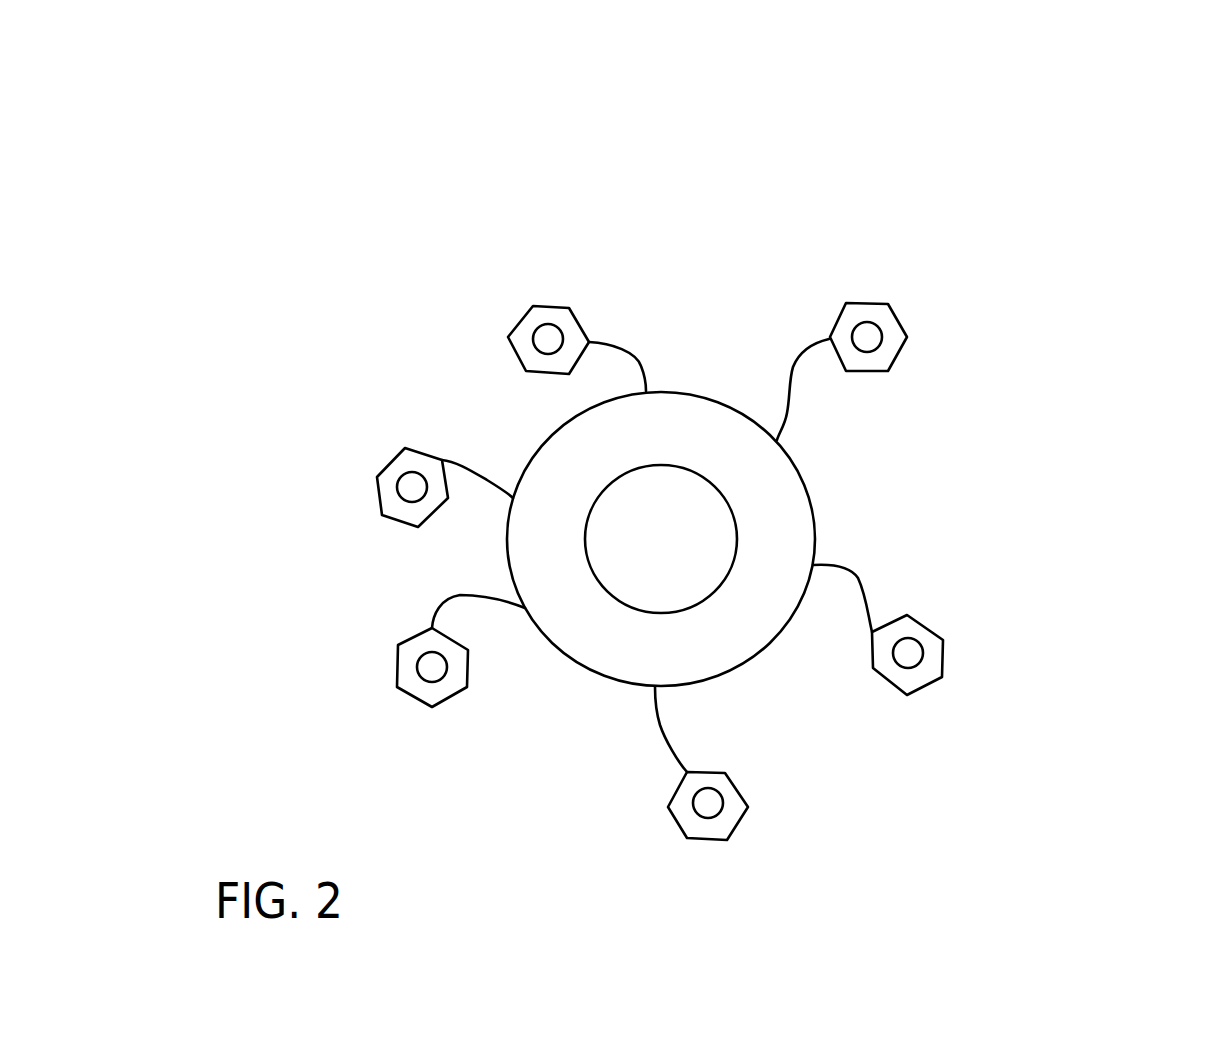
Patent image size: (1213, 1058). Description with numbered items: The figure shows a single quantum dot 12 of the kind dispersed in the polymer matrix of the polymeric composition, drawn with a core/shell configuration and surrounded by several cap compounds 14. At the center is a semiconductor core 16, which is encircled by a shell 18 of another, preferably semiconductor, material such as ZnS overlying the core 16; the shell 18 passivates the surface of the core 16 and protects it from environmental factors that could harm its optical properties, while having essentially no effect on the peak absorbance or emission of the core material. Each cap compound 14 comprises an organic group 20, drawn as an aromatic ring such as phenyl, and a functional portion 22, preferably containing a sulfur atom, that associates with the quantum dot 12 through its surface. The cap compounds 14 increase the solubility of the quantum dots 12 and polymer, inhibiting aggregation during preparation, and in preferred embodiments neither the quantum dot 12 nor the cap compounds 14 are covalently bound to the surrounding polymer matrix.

The quantum dot 12 is at (789, 452).
The cap compound 14 is at (989, 325).
The semiconductor core 16 is at (712, 529).
The shell 18 is at (725, 625).
The organic group 20 is at (900, 324).
The functional portion 22 is at (795, 407).